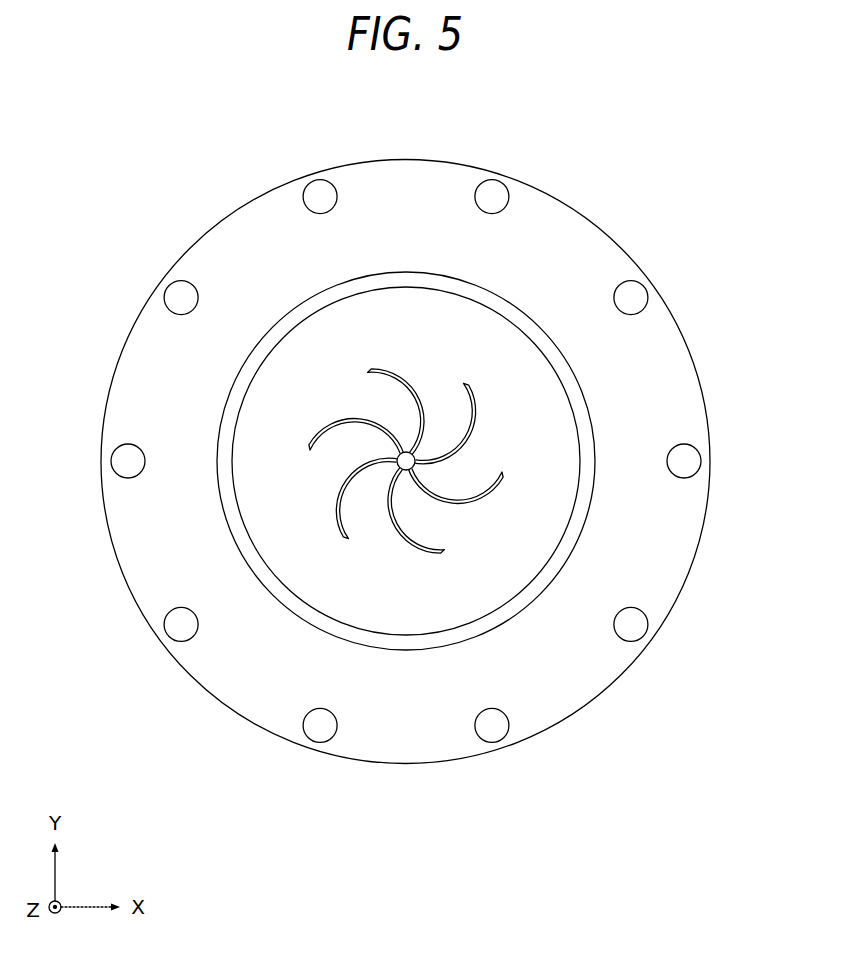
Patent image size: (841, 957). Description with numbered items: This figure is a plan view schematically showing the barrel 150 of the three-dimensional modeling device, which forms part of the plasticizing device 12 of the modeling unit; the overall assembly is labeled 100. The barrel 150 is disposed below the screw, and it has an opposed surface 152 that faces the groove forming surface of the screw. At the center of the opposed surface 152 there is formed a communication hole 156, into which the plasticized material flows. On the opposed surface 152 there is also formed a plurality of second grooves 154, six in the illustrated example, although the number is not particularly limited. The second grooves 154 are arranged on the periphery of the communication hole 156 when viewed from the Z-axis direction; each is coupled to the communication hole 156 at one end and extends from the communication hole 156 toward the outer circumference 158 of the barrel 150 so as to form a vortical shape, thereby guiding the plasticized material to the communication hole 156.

The pump / fluid device 100 is at (686, 146).
The plasticizing device 12 is at (153, 227).
The barrel 150 is at (623, 201).
The opposed surface 152 is at (438, 658).
The second grooves 154 is at (392, 372).
The communication hole 156 is at (386, 462).
The outer circumference 158 is at (142, 613).